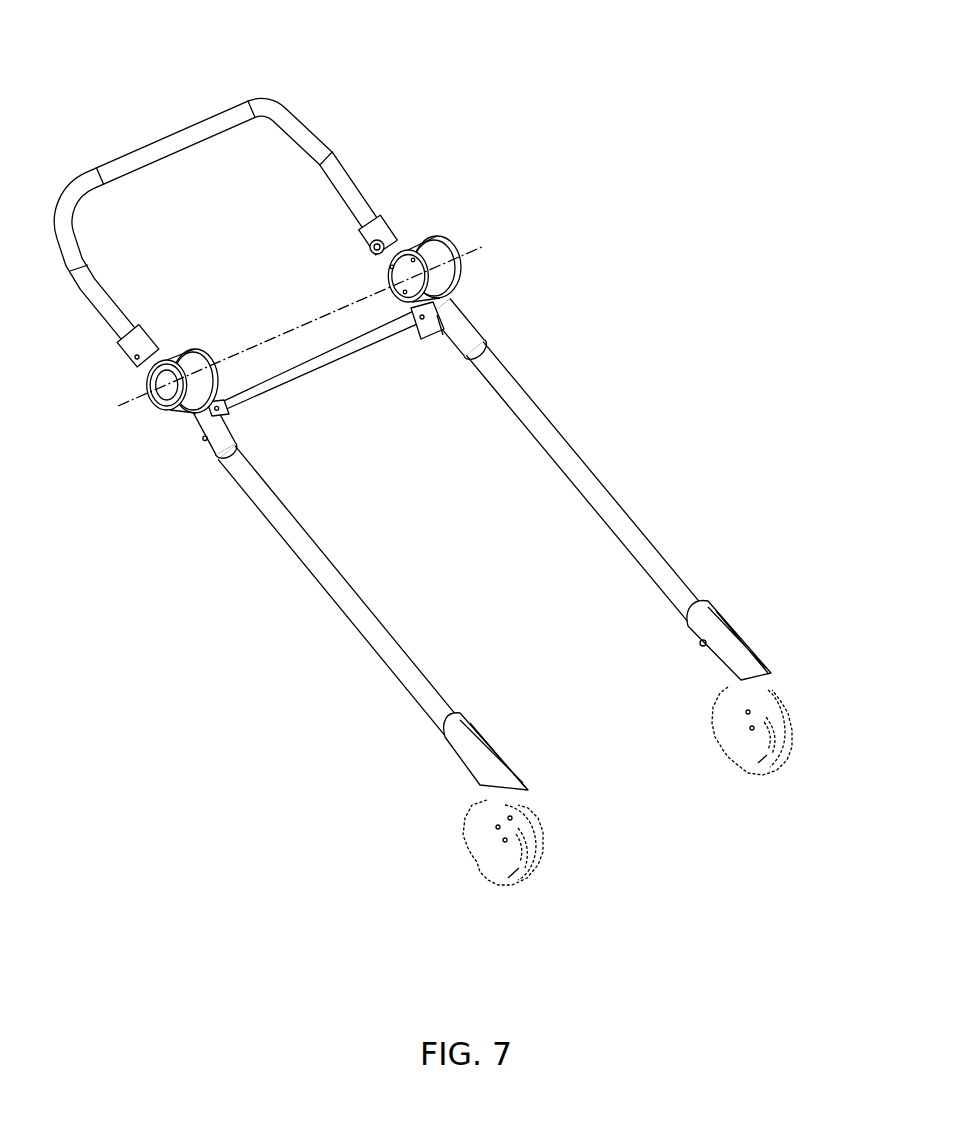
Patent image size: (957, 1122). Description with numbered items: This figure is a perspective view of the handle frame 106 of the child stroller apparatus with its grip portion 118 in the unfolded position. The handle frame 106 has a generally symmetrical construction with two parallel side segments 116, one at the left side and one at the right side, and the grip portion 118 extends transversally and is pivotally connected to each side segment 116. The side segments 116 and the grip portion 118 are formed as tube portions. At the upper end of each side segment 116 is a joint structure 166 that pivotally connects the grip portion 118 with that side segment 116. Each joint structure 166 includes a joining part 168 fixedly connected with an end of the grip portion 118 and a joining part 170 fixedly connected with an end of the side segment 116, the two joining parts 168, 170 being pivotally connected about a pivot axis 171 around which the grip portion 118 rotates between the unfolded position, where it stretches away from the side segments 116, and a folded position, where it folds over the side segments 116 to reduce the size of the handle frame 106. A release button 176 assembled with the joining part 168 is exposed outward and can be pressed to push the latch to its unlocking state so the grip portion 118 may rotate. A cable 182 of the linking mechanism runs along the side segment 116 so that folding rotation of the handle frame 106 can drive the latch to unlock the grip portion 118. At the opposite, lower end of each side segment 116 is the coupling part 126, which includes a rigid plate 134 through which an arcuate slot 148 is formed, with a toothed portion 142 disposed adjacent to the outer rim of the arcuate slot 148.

The handle frame 106 is at (226, 82).
The side segment 116 is at (597, 490).
The grip portion 118 is at (120, 322).
The coupling part 126 is at (797, 672).
The rigid plate 134 is at (720, 720).
The toothed portion 142 is at (772, 740).
The arcuate slot 148 is at (750, 769).
The joint structure 166 is at (427, 207).
The joining part 168 is at (377, 212).
The joining part 170 is at (462, 312).
The pivot axis 171 is at (298, 320).
The release button 176 is at (158, 404).
The cable 182 is at (515, 812).